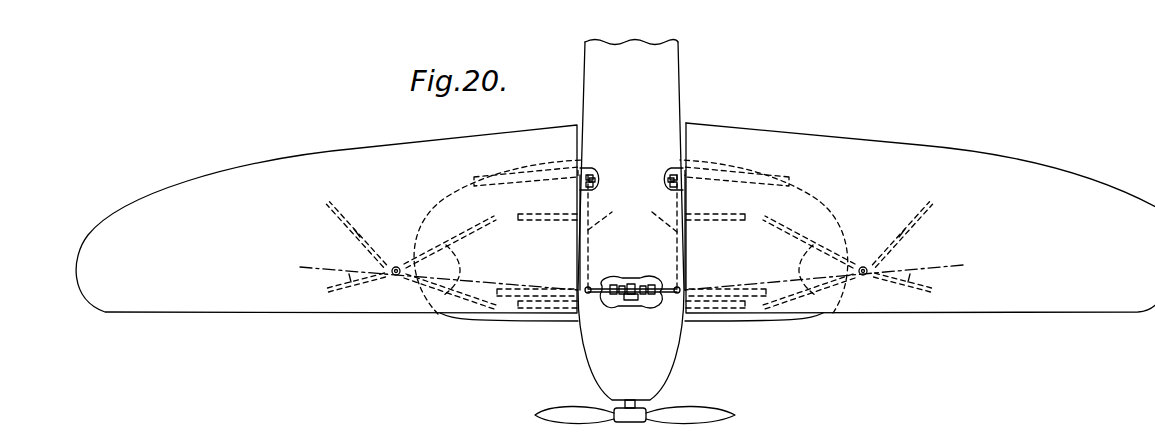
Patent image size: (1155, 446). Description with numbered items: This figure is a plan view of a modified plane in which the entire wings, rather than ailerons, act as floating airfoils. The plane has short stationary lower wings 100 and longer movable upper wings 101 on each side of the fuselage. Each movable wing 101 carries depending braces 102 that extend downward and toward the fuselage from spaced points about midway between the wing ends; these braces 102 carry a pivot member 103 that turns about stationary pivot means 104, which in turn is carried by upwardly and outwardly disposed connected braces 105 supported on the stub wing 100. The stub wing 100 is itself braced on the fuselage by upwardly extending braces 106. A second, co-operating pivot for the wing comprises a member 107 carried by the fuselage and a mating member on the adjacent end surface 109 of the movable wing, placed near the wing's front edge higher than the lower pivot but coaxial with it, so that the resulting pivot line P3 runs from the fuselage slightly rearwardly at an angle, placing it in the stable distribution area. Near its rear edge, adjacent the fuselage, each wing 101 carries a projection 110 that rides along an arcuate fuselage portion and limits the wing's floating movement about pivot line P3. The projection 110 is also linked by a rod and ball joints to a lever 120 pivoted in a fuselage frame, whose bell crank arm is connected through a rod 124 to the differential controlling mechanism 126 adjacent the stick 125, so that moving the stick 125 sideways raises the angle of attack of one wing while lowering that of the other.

The stationary lower wing 100 is at (430, 207).
The movable upper wing 101 is at (313, 157).
The depending brace 102 is at (349, 277).
The pivot member 103 is at (388, 280).
The stationary pivot means 104 is at (396, 282).
The connected brace 105 is at (452, 252).
The upwardly extending brace 106 is at (555, 216).
The pivot member carried by the fuselage 107 is at (585, 297).
The end surface of the movable wing 109 is at (579, 258).
The projection 110 is at (584, 166).
The lever 120 is at (667, 179).
The rod 124 is at (632, 215).
The stick 125 is at (635, 284).
The controlling mechanism 126 is at (629, 284).
The pivot line P3 is at (503, 282).